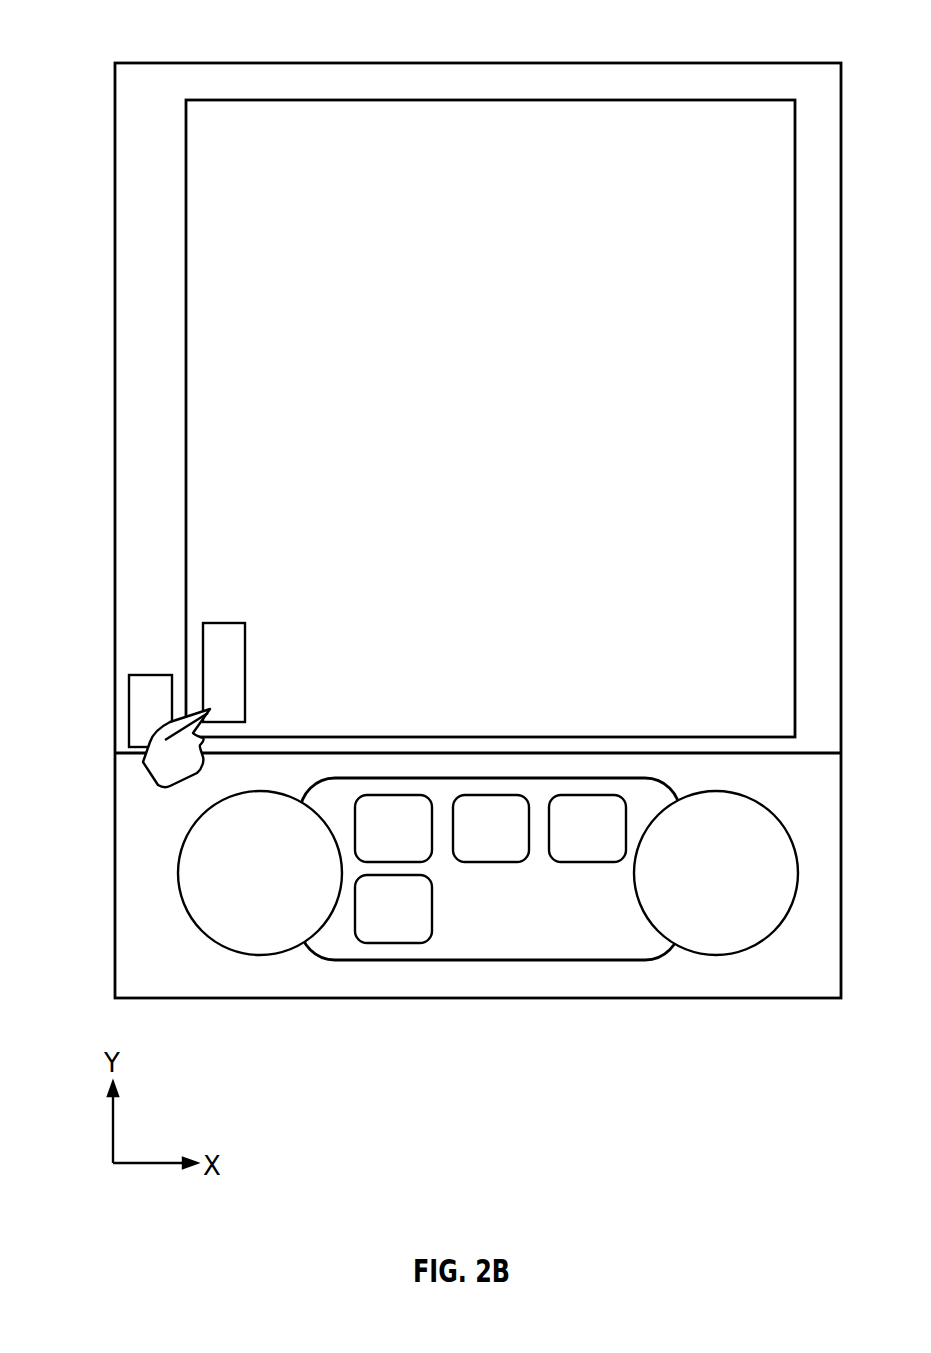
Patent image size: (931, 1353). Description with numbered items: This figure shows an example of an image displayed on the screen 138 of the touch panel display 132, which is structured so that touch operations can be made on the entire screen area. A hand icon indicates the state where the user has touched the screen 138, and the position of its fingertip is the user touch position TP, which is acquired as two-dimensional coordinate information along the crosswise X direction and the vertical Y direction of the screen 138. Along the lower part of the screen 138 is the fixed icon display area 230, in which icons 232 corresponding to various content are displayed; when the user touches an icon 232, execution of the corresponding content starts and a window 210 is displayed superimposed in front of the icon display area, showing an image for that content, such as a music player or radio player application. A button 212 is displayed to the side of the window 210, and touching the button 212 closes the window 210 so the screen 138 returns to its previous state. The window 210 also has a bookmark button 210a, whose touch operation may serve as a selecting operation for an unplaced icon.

The touch panel display 132 is at (113, 278).
The screen 138 is at (128, 147).
The window 210 is at (708, 120).
The bookmark button 210a is at (218, 650).
The button 212 is at (137, 728).
The user touch position TP is at (210, 708).
The fixed icon display area 230 is at (625, 962).
The icon 232 is at (586, 862).